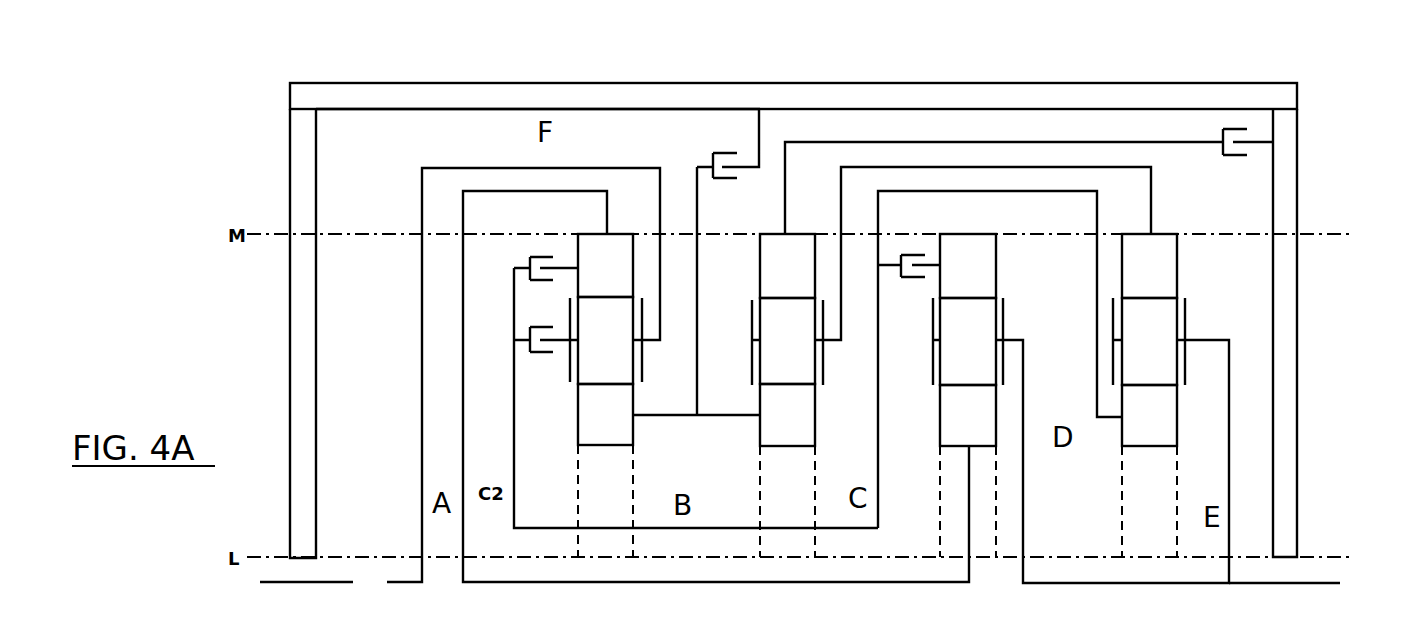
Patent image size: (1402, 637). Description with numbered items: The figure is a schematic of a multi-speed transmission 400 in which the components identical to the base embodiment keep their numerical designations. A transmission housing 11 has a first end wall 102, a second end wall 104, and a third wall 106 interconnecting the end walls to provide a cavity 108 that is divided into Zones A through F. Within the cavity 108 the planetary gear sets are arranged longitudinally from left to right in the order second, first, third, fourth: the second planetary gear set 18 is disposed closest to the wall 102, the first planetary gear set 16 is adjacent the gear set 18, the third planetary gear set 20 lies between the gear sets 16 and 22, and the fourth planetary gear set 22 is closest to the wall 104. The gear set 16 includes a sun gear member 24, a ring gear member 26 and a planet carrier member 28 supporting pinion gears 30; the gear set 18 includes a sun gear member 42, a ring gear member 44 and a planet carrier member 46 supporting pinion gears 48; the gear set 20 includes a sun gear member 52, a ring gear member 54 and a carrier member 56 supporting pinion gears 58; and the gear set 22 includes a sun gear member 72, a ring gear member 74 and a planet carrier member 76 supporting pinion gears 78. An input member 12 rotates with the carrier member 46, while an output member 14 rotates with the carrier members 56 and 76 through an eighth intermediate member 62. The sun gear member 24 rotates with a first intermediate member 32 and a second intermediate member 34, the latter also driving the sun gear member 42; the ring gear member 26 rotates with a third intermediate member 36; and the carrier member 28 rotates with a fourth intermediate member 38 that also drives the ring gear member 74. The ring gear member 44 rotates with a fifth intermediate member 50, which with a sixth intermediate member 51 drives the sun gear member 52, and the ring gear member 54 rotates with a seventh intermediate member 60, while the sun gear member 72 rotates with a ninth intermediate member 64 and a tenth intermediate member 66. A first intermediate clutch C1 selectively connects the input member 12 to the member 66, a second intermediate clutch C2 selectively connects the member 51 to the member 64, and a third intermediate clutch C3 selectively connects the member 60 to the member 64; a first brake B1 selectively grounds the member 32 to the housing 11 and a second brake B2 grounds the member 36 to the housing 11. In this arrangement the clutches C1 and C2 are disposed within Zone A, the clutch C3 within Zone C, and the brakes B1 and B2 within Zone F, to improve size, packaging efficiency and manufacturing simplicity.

The transmission housing 11 is at (789, 304).
The input member 12 is at (405, 580).
The output member 14 is at (1315, 580).
The first planetary gear set 16 is at (786, 395).
The second planetary gear set 18 is at (605, 395).
The third planetary gear set 20 is at (967, 395).
The fourth planetary gear set 22 is at (1154, 395).
The sun gear member 24 is at (787, 415).
The ring gear member 26 is at (787, 266).
The planet carrier member 28 is at (750, 321).
The pinion gears 30 is at (787, 341).
The first intermediate member 32 is at (700, 341).
The second intermediate member 34 is at (655, 417).
The third intermediate member 36 is at (938, 142).
The fourth intermediate member 38 is at (1043, 167).
The sun gear member 42 is at (605, 414).
The ring gear member 44 is at (605, 265).
The planet carrier member 46 is at (570, 373).
The pinion gears 48 is at (605, 340).
The fifth intermediate member 50 is at (725, 585).
The sixth intermediate member 51 is at (530, 283).
The sun gear member 52 is at (968, 415).
The ring gear member 54 is at (968, 266).
The carrier member 56 is at (930, 355).
The pinion gears 58 is at (968, 341).
The seventh intermediate member 60 is at (985, 294).
The eighth intermediate member 62 is at (1092, 585).
The ninth intermediate member 64 is at (514, 388).
The tenth intermediate member 66 is at (878, 405).
The sun gear member 72 is at (1149, 415).
The ring gear member 74 is at (1149, 266).
The planet carrier member 76 is at (1113, 318).
The pinion gears 78 is at (1149, 341).
The first end wall 102 is at (306, 155).
The second end wall 104 is at (1285, 287).
The third wall 106 is at (858, 97).
The cavity 108 is at (395, 133).
The multi-speed transmission 400 is at (1312, 138).
The first brake B1 is at (728, 143).
The second brake B2 is at (1231, 137).
The first intermediate clutch C1 is at (546, 351).
The second intermediate clutch C2 is at (567, 270).
The third intermediate clutch C3 is at (930, 258).